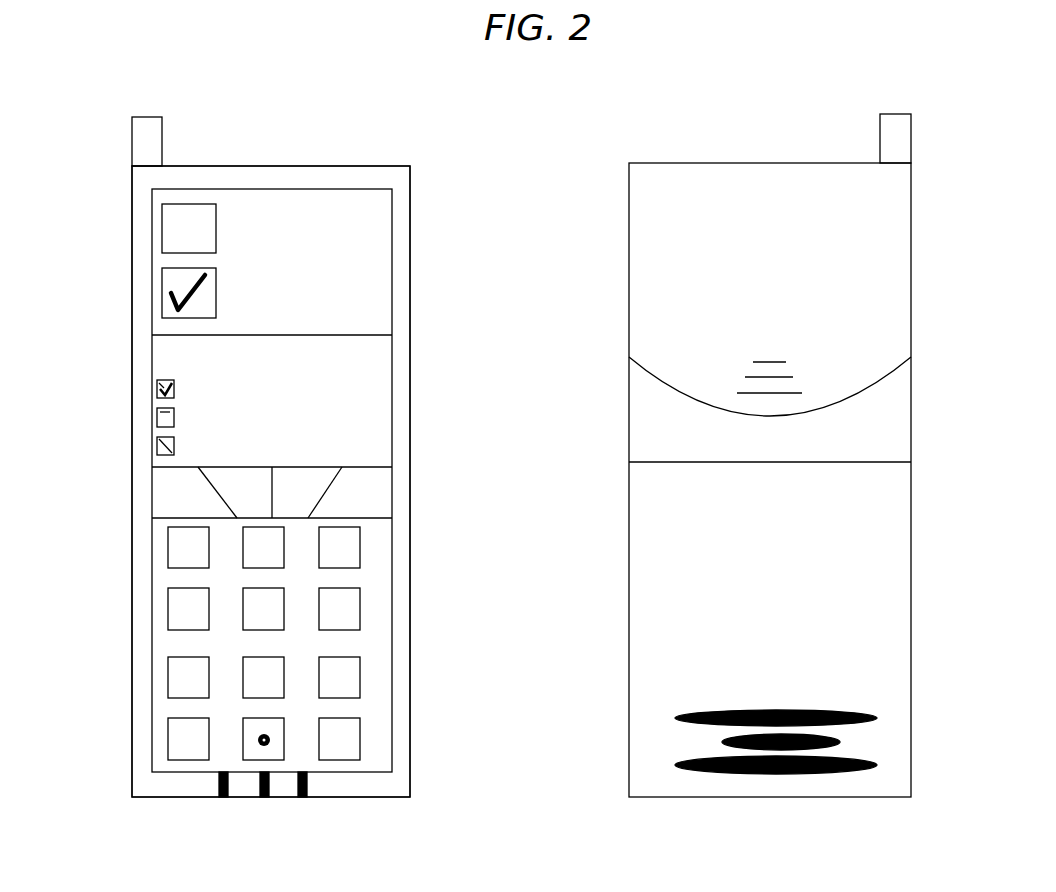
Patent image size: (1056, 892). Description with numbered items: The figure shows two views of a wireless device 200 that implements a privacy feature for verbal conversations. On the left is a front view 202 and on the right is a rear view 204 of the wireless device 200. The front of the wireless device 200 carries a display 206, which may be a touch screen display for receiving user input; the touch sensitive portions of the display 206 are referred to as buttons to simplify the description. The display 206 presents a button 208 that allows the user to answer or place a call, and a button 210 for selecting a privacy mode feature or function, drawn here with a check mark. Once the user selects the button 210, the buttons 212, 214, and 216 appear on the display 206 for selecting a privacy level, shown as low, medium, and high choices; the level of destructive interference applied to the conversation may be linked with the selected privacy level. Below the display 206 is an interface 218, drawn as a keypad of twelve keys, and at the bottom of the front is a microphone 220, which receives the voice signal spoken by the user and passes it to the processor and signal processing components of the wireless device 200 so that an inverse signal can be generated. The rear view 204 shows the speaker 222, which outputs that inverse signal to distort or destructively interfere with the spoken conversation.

The wireless device 200 is at (217, 165).
The front view 202 is at (353, 165).
The rear view 204 is at (727, 164).
The display 206 is at (152, 188).
The button 208 is at (173, 237).
The button 210 is at (173, 308).
The button 212 is at (157, 392).
The button 214 is at (173, 418).
The button 216 is at (157, 438).
The interface 218 is at (153, 470).
The microphone 220 is at (272, 775).
The speaker 222 is at (877, 718).